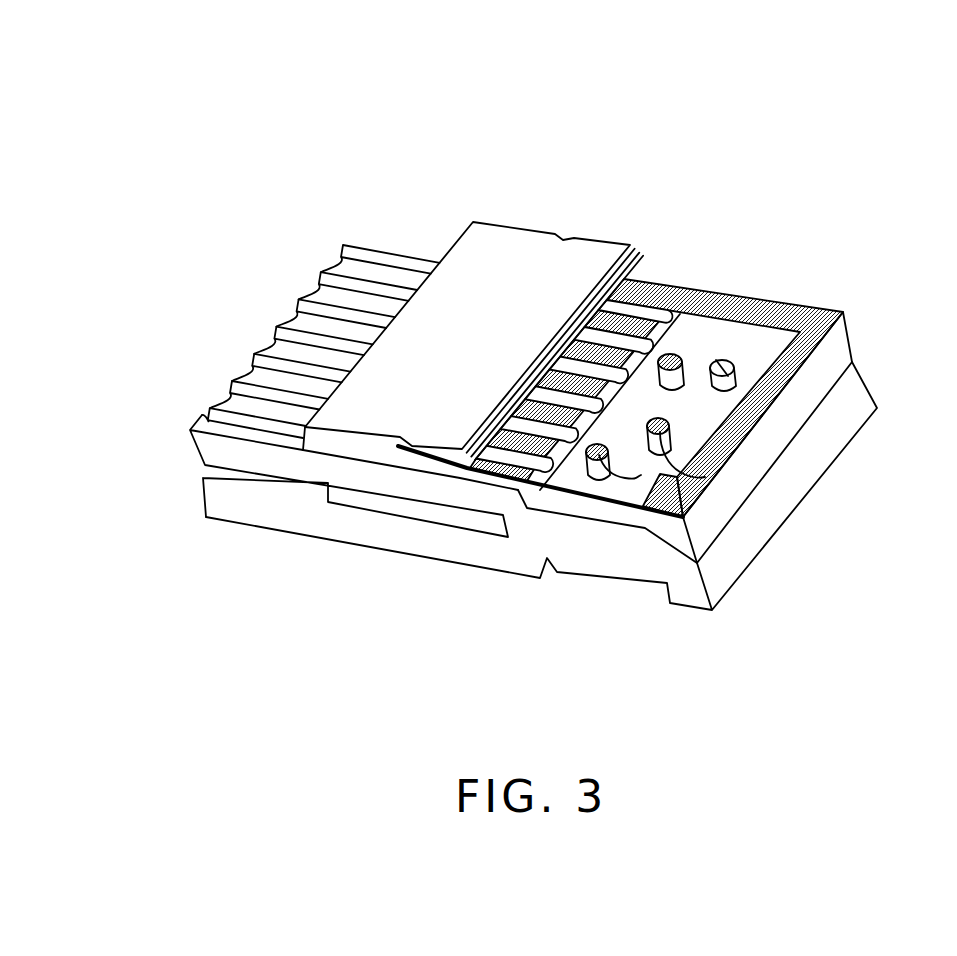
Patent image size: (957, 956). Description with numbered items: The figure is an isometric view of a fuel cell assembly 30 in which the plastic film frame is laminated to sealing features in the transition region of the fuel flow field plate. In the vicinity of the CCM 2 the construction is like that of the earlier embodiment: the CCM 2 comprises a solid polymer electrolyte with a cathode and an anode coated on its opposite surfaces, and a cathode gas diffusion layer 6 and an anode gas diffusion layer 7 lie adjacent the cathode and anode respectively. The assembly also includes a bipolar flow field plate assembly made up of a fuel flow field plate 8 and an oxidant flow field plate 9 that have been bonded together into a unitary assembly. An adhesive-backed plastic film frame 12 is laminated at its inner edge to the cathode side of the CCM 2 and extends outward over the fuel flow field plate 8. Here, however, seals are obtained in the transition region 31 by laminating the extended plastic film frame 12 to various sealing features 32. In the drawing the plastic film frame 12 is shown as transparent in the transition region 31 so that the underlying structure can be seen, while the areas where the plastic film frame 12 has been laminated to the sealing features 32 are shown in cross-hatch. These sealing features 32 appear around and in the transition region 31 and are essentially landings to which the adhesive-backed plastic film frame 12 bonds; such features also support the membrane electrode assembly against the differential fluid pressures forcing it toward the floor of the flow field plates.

The CCM 2 is at (273, 442).
The cathode gas diffusion layer 6 is at (505, 248).
The anode gas diffusion layer 7 is at (361, 453).
The fuel flow field plate 8 is at (845, 355).
The oxidant flow field plate 9 is at (862, 410).
The plastic film frame 12 is at (703, 339).
The fuel cell assembly 30 is at (855, 133).
The transition region 31 is at (757, 278).
The sealing features 32 is at (618, 353).